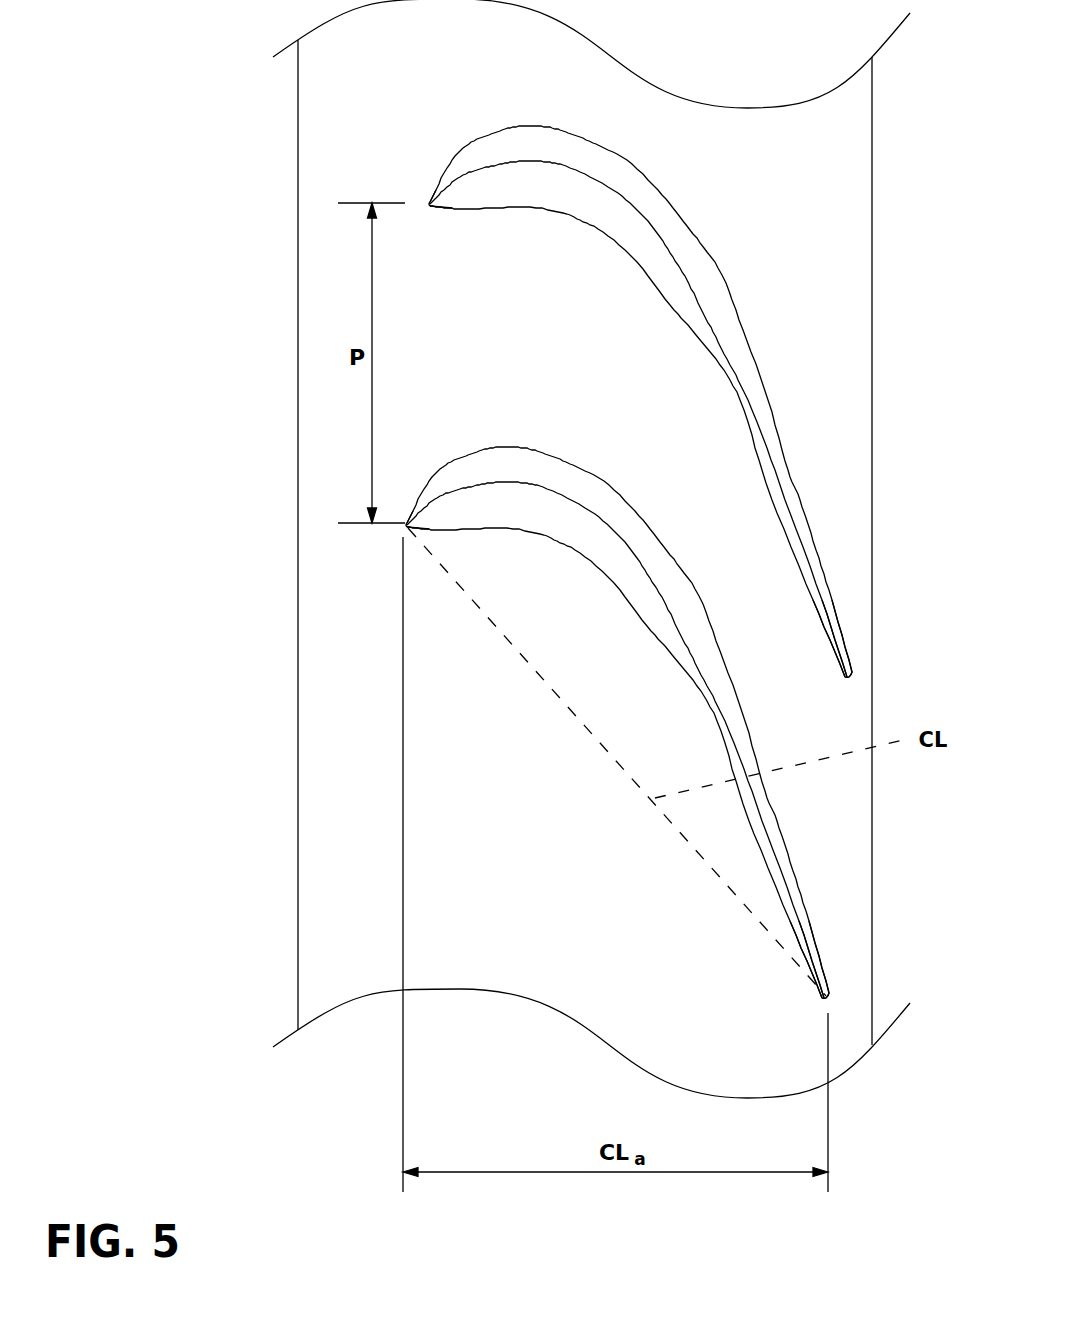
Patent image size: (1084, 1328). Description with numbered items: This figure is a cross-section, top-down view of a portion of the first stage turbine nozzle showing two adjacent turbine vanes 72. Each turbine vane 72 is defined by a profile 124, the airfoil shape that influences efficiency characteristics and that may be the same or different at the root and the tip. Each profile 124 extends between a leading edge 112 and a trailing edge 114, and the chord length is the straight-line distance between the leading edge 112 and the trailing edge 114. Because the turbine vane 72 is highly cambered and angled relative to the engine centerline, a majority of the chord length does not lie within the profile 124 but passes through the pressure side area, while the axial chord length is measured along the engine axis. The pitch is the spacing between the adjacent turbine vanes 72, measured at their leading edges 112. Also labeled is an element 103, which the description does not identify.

The turbine vane 72 is at (680, 562).
The platform / flow path wall 103 is at (344, 767).
The leading edge 112 is at (429, 208).
The trailing edge 114 is at (847, 683).
The profile 124 is at (670, 230).